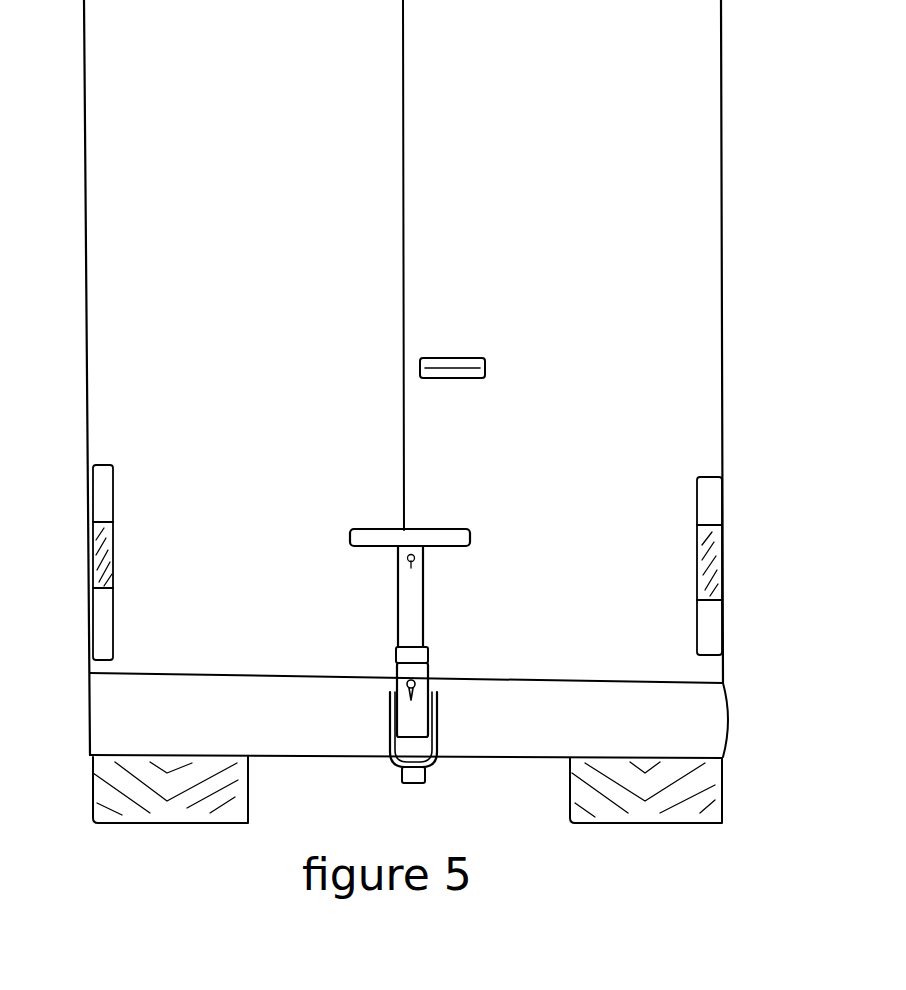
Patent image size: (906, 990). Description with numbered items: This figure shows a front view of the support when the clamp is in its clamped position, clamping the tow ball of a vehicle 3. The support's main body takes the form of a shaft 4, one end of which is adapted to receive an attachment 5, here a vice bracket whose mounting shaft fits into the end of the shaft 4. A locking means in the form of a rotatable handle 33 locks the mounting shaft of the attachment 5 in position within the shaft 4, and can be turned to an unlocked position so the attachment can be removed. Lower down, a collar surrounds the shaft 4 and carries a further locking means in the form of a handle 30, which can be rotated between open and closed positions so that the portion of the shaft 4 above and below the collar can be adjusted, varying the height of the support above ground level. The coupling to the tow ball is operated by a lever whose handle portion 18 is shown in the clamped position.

The vehicle 3 is at (723, 437).
The attachment 5 is at (362, 530).
The shaft 4 is at (398, 608).
The handle 33 is at (400, 565).
The handle 30 is at (395, 690).
The handle portion 18 is at (392, 762).